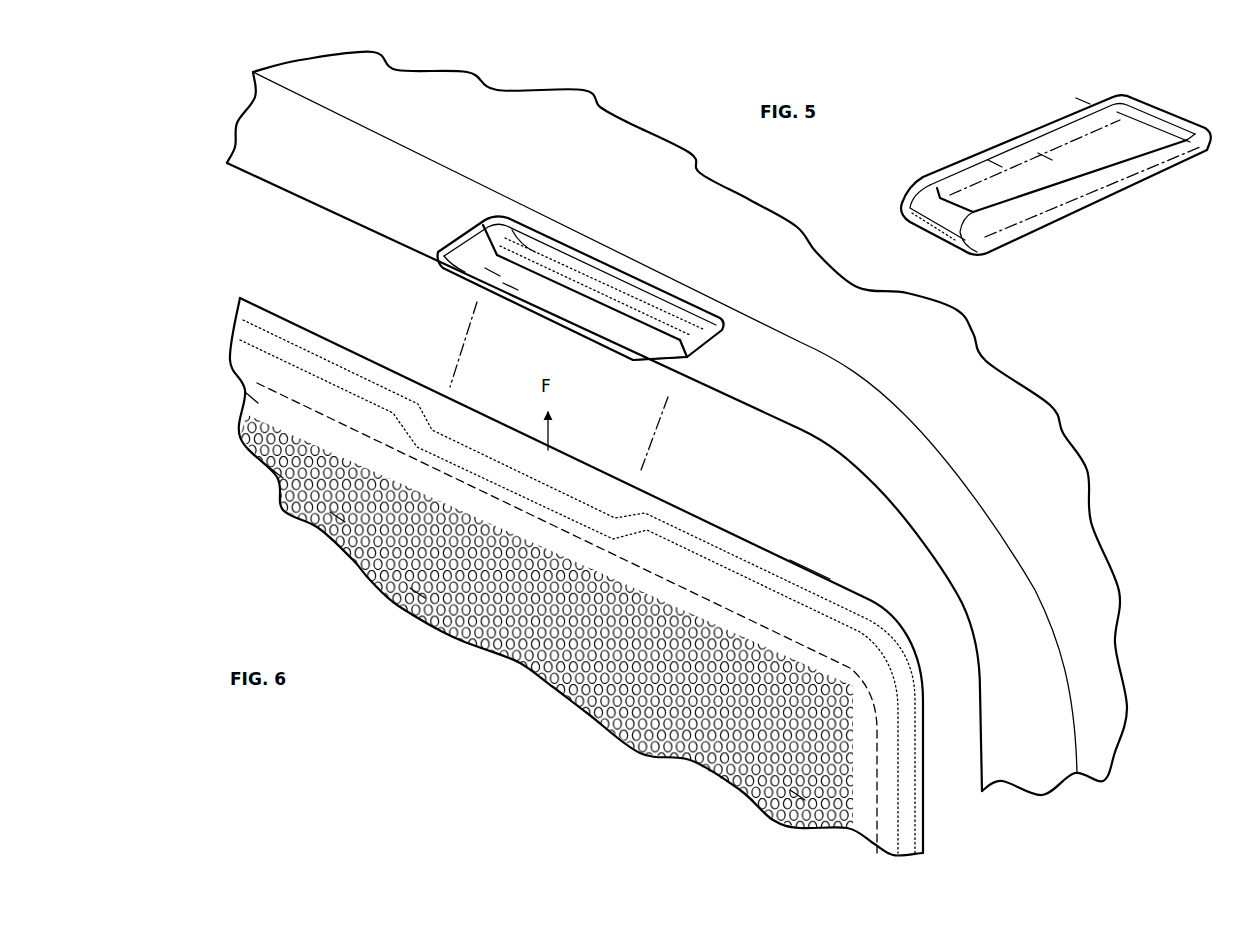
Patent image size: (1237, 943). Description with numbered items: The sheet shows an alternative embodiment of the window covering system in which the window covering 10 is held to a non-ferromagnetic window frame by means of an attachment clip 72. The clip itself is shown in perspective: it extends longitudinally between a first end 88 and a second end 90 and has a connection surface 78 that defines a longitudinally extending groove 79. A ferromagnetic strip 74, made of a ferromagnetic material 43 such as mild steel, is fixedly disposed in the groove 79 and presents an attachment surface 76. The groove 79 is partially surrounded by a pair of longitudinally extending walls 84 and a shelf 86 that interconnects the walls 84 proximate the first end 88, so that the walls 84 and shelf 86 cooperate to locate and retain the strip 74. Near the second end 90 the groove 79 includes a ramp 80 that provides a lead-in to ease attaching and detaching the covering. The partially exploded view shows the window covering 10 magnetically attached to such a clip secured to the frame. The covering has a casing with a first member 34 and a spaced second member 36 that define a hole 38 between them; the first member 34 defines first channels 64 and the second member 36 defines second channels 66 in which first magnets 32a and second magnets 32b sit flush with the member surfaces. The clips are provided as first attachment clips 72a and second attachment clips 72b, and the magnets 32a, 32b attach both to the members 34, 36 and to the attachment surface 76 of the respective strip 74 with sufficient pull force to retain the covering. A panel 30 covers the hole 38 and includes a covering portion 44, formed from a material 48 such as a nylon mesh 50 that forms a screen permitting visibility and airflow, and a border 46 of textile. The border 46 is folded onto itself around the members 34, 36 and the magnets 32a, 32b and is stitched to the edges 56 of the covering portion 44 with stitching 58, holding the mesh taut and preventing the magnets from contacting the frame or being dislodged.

In FIG. 6, the window covering 10 is at (222, 290).
In FIG. 6, the panel 30 is at (603, 697).
In FIG. 6, the first magnets 32a is at (577, 586).
In FIG. 6, the second magnets 32b is at (432, 423).
In FIG. 6, the first member 34 is at (827, 558).
In FIG. 6, the second member 36 is at (800, 583).
In FIG. 6, the hole 38 is at (800, 793).
In FIG. 6, the ferromagnetic material 43 is at (607, 323).
In FIG. 5, the ferromagnetic material 43 is at (1070, 150).
In FIG. 6, the covering portion 44 is at (338, 518).
In FIG. 6, the border 46 is at (245, 358).
In FIG. 6, the material 48 is at (417, 593).
In FIG. 6, the nylon mesh 50 is at (278, 473).
In FIG. 6, the edges 56 is at (257, 403).
In FIG. 6, the stitching 58 is at (257, 383).
In FIG. 6, the first channels 64 is at (589, 395).
In FIG. 6, the second channels 66 is at (640, 488).
In FIG. 5, the attachment clip 72 is at (952, 145).
In FIG. 6, the first attachment clips 72a is at (581, 249).
In FIG. 6, the second attachment clips 72b is at (498, 208).
In FIG. 6, the ferromagnetic strip 74 is at (573, 307).
In FIG. 5, the ferromagnetic strip 74 is at (1085, 140).
In FIG. 6, the attachment surface 76 is at (510, 282).
In FIG. 5, the attachment surface 76 is at (1045, 157).
In FIG. 6, the connection surface 78 is at (527, 248).
In FIG. 5, the connection surface 78 is at (1083, 100).
In FIG. 6, the groove 79 is at (490, 272).
In FIG. 5, the groove 79 is at (995, 163).
In FIG. 6, the ramp 80 is at (472, 257).
In FIG. 5, the ramp 80 is at (945, 215).
In FIG. 6, the longitudinally extending walls 84 is at (677, 327).
In FIG. 5, the longitudinally extending walls 84 is at (925, 180).
In FIG. 6, the shelf 86 is at (673, 352).
In FIG. 5, the shelf 86 is at (1160, 108).
In FIG. 6, the first end 88 is at (687, 357).
In FIG. 5, the first end 88 is at (1182, 118).
In FIG. 6, the second end 90 is at (467, 230).
In FIG. 5, the second end 90 is at (905, 220).